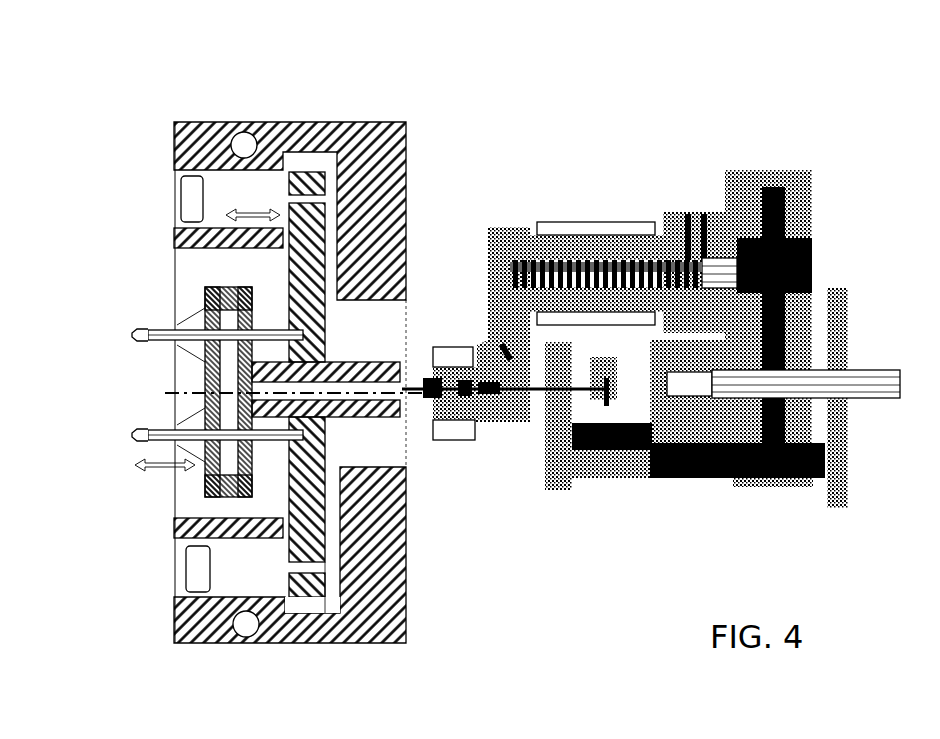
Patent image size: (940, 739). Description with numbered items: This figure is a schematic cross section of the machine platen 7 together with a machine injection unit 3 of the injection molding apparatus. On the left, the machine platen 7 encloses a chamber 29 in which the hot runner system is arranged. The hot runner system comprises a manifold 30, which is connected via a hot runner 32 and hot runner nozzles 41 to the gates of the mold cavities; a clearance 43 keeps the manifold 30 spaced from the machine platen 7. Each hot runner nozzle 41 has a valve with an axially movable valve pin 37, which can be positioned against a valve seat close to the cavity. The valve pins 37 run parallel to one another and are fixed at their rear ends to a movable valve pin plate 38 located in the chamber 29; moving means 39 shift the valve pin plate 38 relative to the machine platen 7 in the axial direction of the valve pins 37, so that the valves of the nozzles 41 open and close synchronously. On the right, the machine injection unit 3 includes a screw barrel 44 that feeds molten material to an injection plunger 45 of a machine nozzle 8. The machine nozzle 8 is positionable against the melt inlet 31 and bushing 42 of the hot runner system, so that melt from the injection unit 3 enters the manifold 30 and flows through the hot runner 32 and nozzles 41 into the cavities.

The machine injection unit 3 is at (713, 110).
The machine platen 7 is at (375, 150).
The machine nozzle 8 is at (458, 374).
The chamber 29 is at (200, 272).
The manifold 30 is at (237, 485).
The melt inlet 31 is at (403, 389).
The hot runner 32 is at (237, 467).
The valve pin 37 is at (140, 437).
The movable valve pin plate 38 is at (312, 583).
The moving means 39 is at (188, 190).
The hot runner nozzle 41 is at (172, 330).
The bushing 42 is at (387, 372).
The clearance 43 is at (335, 597).
The screw barrel 44 is at (590, 258).
The injection plunger 45 is at (528, 390).